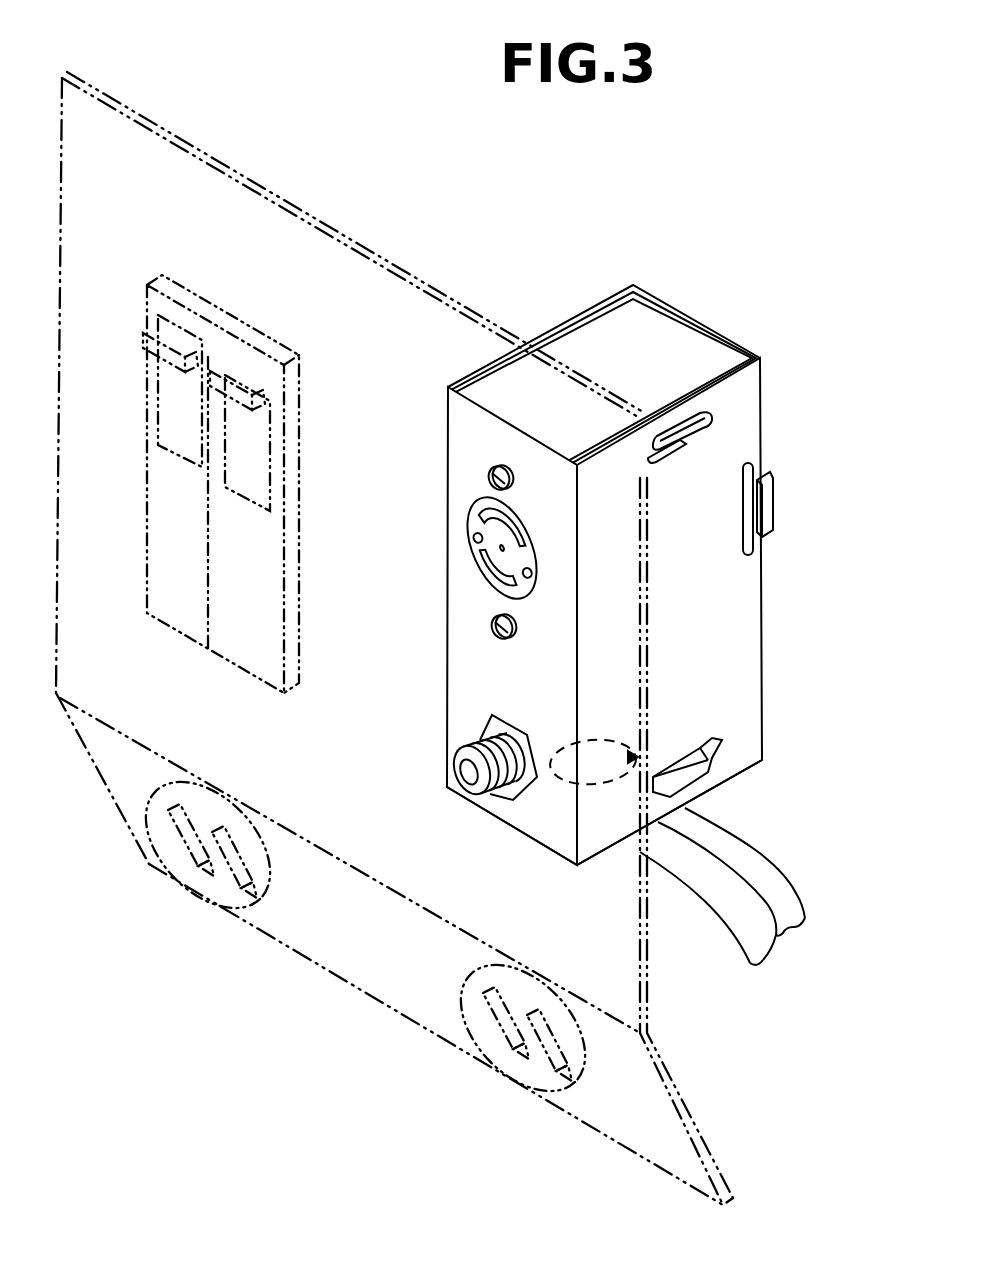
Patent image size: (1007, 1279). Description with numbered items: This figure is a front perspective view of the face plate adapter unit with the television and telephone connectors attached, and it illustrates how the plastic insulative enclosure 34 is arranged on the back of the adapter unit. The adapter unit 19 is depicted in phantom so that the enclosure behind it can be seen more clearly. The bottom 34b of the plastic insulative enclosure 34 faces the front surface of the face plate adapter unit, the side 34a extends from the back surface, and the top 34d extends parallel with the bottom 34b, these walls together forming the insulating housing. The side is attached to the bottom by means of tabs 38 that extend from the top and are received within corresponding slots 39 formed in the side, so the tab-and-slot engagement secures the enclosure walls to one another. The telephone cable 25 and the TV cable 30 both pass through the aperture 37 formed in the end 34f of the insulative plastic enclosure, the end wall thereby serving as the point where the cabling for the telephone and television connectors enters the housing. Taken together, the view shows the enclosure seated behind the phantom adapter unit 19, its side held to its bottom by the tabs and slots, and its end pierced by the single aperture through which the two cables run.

The adapter unit 19 is at (227, 163).
The telephone cable 25 is at (730, 932).
The TV cable 30 is at (777, 863).
The plastic insulative enclosure 34 is at (661, 535).
The side 34a is at (700, 630).
The bottom 34b is at (562, 514).
The top 34d is at (687, 317).
The end 34f is at (747, 770).
The aperture 37 is at (592, 740).
The tabs 38 is at (773, 500).
The slots 39 is at (680, 445).